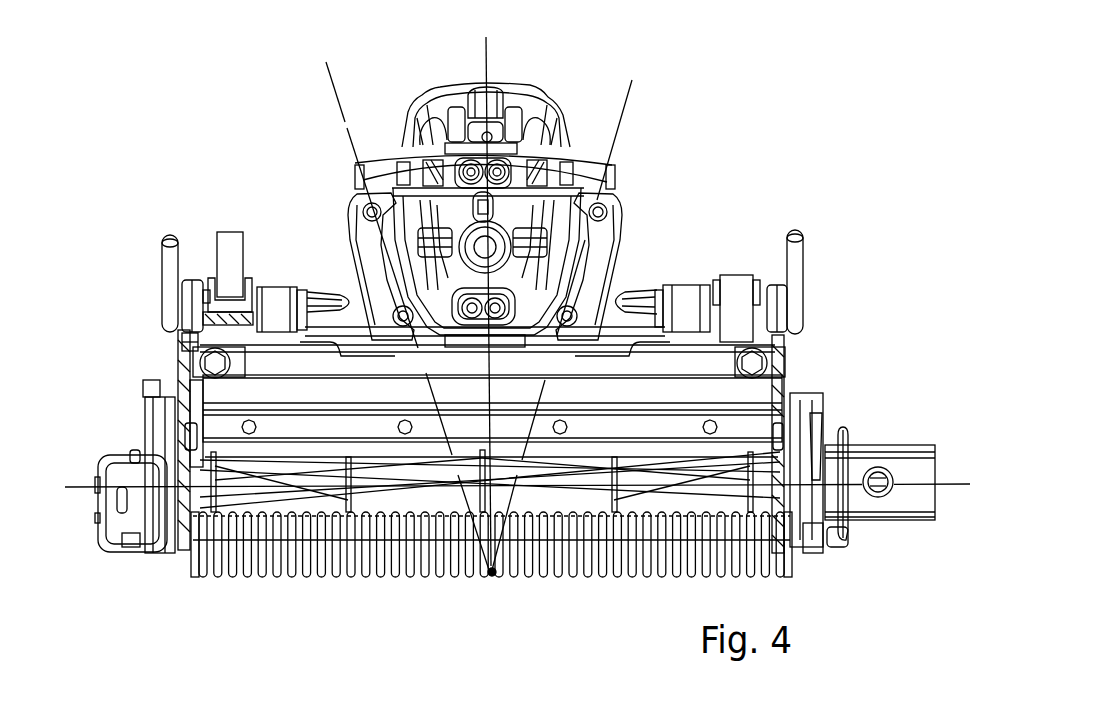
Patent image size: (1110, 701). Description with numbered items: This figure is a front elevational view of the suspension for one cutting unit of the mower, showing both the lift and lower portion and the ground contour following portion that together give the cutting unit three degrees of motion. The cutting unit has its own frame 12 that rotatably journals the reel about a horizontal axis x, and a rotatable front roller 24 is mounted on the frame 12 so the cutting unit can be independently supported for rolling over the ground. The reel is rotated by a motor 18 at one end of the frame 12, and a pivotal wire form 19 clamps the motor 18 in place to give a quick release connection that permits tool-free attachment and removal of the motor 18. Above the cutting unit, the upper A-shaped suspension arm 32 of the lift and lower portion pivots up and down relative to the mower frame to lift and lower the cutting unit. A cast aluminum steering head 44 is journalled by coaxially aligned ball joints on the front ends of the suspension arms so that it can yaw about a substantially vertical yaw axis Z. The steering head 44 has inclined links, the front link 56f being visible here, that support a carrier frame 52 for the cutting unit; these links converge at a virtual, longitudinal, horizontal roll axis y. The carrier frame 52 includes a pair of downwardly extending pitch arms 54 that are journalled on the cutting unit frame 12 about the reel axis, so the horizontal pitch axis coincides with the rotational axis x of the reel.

The cutting unit frame 12 is at (675, 383).
The motor 18 is at (870, 460).
The pivotal wire form 19 is at (841, 428).
The front roller 24 is at (318, 546).
The upper A-shaped suspension arm 32 is at (520, 88).
The steering head 44 is at (384, 250).
The carrier frame 52 is at (347, 321).
The pitch arms 54 is at (176, 395).
The inclined link 56f is at (648, 242).
The yaw axis Z is at (488, 52).
The reel rotational axis and pitch axis x is at (92, 488).
The roll axis y is at (492, 572).